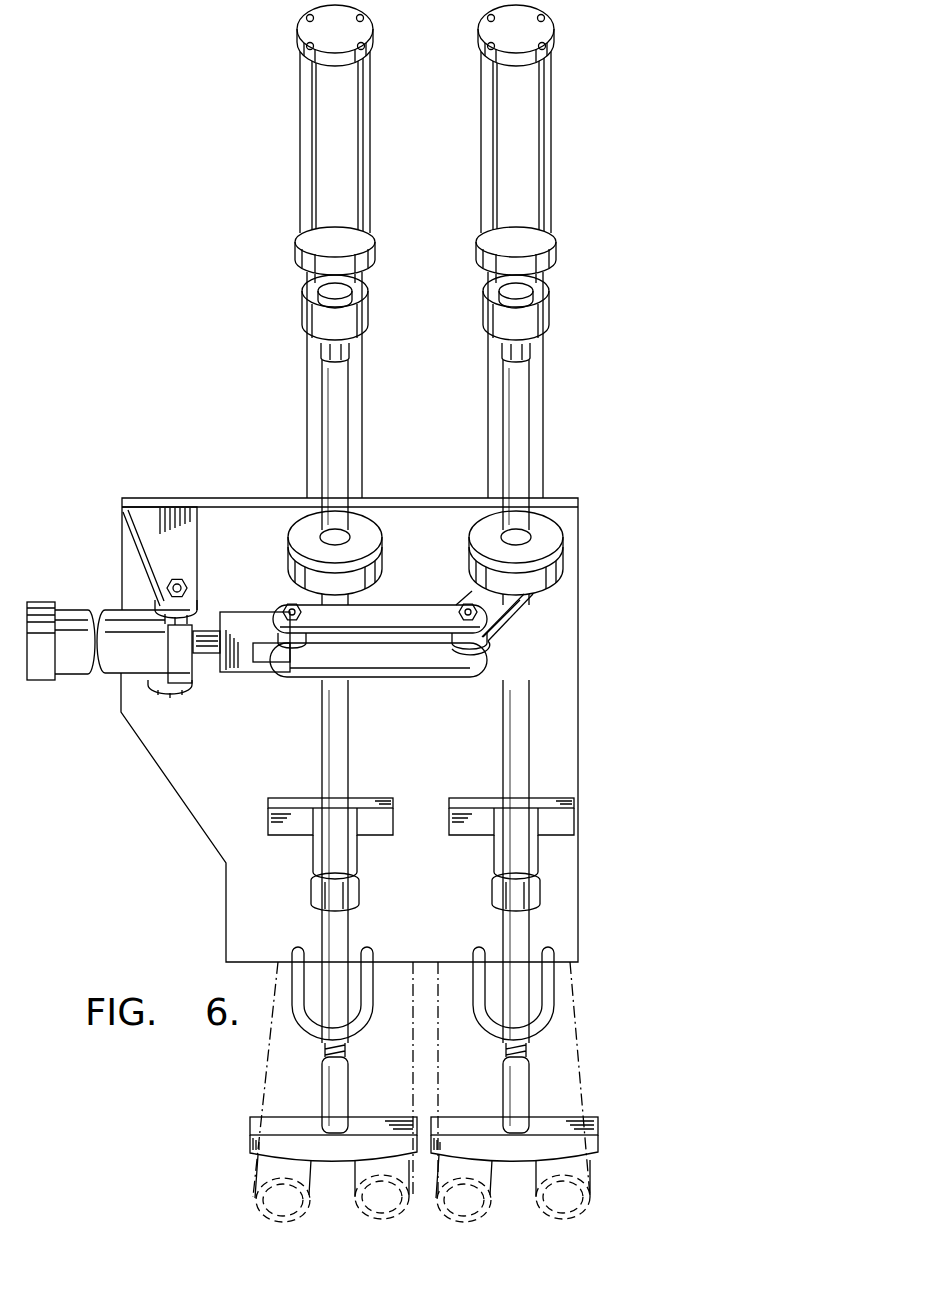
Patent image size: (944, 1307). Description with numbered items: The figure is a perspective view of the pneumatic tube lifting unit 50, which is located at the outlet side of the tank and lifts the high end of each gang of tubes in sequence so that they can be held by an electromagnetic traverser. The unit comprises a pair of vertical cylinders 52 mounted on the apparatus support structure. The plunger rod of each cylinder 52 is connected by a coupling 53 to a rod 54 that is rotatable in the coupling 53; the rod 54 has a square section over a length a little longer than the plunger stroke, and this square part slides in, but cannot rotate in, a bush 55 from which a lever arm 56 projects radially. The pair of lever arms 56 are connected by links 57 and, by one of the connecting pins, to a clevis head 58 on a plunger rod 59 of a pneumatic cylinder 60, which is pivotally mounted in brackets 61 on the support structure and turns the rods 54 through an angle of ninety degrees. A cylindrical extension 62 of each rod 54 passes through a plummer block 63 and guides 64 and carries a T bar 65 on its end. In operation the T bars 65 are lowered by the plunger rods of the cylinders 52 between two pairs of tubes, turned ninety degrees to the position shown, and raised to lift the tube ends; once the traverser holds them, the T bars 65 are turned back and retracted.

The pneumatic tube lifting unit 50 is at (300, 432).
The vertical cylinders 52 is at (330, 115).
The coupling 53 is at (488, 325).
The rod 54 is at (508, 410).
The bush 55 is at (467, 555).
The lever arm 56 is at (467, 594).
The links 57 is at (403, 625).
The clevis head 58 is at (263, 667).
The plunger rod 59 is at (215, 651).
The pneumatic cylinder 60 is at (65, 668).
The brackets 61 is at (178, 548).
The cylindrical extension 62 is at (490, 749).
The plummer block 63 is at (485, 861).
The guides 64 is at (372, 953).
The T bar 65 is at (258, 1125).